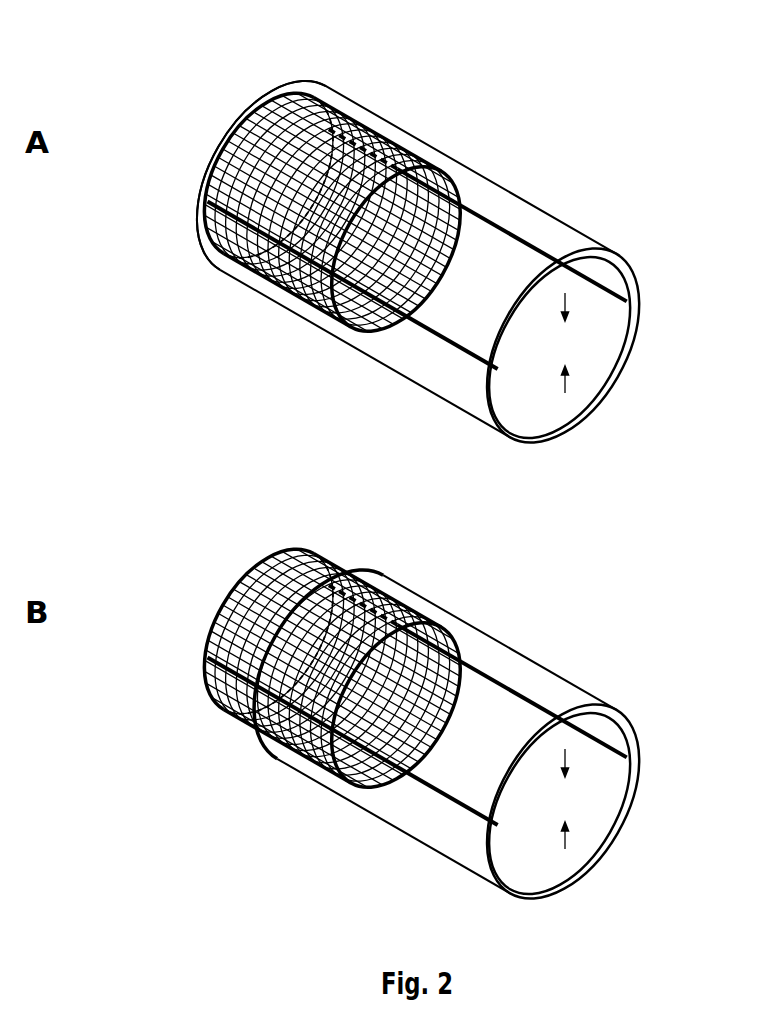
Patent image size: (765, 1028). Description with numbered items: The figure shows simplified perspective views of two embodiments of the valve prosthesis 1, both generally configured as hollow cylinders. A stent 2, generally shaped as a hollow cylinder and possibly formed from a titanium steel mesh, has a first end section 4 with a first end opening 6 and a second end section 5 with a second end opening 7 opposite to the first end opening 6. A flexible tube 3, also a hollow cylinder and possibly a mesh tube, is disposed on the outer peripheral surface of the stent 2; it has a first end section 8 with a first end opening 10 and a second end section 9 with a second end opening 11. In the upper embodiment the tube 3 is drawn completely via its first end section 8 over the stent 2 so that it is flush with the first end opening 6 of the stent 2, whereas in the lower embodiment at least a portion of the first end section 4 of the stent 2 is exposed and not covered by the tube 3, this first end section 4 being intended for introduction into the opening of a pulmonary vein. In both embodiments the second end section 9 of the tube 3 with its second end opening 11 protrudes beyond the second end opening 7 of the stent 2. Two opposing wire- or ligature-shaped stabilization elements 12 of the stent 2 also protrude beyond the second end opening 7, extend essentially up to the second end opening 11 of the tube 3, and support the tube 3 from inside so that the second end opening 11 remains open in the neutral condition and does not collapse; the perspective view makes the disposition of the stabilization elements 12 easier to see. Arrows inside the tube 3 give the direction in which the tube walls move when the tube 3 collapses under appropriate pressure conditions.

The valve prosthesis 1 is at (184, 45).
The stent 2 is at (300, 120).
The flexible tube 3 is at (380, 347).
The first end section 4 is at (218, 230).
The second end section 5 is at (280, 293).
The first end opening 6 is at (220, 152).
The second end opening 7 is at (413, 257).
The first end section 8 is at (318, 93).
The second end section 9 is at (513, 213).
The first end opening 10 is at (203, 187).
The second end opening 11 is at (570, 353).
The stabilization elements 12 is at (593, 293).